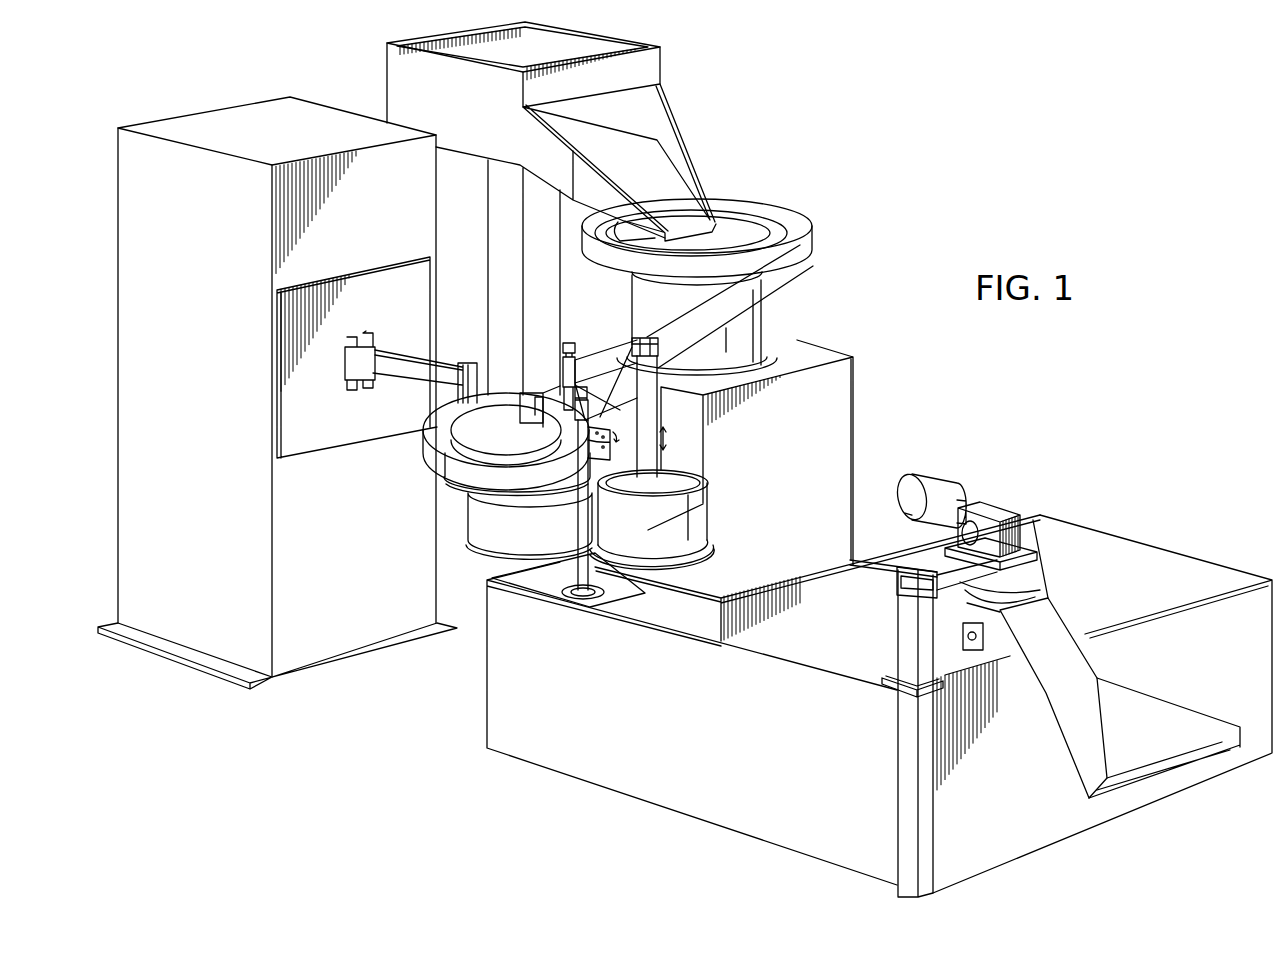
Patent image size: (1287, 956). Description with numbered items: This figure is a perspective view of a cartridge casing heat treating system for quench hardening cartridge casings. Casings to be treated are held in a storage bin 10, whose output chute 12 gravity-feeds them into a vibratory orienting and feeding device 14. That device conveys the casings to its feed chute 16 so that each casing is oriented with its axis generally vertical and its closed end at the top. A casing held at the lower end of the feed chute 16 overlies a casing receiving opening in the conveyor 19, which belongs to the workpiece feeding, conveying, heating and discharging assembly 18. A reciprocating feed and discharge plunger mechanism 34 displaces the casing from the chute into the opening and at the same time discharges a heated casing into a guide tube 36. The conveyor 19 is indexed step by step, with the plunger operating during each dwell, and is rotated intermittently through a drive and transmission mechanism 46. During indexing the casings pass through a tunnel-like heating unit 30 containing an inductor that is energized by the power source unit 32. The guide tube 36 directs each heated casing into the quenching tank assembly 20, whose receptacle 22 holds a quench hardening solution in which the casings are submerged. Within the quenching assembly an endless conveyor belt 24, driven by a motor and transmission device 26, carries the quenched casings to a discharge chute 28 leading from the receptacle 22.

The storage bin 10 is at (686, 85).
The output chute 12 is at (707, 149).
The vibratory orienting and feeding device 14 is at (806, 206).
The feed chute 16 is at (737, 293).
The workpiece feeding, conveying, heating and discharging assembly 18 is at (551, 360).
The conveyor 19 is at (551, 388).
The quenching tank assembly 20 is at (948, 457).
The receptacle 22 is at (657, 790).
The endless conveyor belt 24 is at (1022, 600).
The motor and transmission device 26 is at (1016, 494).
The discharge chute 28 is at (1160, 713).
The tunnel-like heating unit 30 is at (414, 441).
The power source unit 32 is at (296, 89).
The feed and discharge plunger mechanism 34 is at (710, 364).
The guide tube 36 is at (577, 583).
The drive and transmission mechanism 46 is at (786, 516).